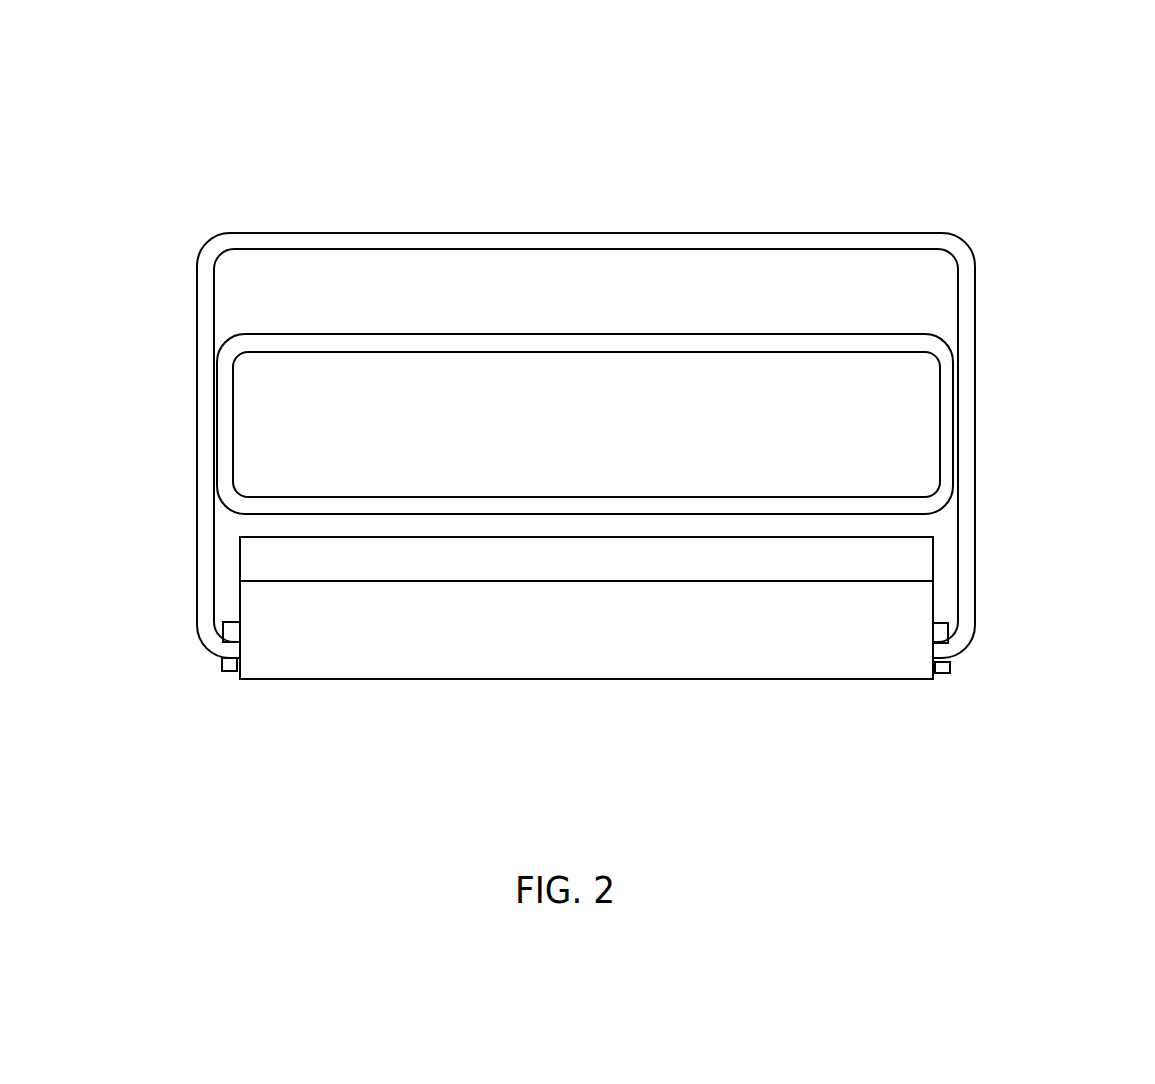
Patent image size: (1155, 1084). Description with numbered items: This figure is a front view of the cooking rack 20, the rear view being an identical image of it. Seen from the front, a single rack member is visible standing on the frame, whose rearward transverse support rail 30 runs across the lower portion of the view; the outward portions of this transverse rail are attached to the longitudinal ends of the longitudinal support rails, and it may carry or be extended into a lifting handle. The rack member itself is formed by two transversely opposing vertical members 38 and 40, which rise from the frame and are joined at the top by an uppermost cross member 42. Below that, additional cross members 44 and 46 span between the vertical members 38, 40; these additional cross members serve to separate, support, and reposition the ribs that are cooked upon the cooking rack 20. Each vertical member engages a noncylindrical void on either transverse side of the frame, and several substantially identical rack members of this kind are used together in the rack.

The cooking rack 20 is at (614, 403).
The rearward transverse support rail 30 is at (902, 565).
The vertical member 38 is at (970, 418).
The vertical member 40 is at (201, 512).
The uppermost cross member 42 is at (623, 247).
The cross member 44 is at (626, 340).
The cross member 46 is at (603, 510).